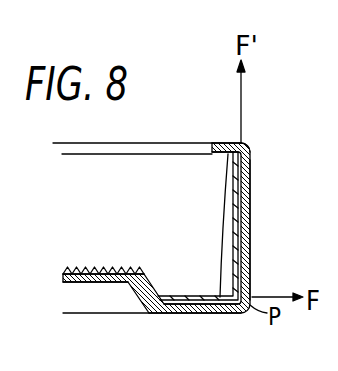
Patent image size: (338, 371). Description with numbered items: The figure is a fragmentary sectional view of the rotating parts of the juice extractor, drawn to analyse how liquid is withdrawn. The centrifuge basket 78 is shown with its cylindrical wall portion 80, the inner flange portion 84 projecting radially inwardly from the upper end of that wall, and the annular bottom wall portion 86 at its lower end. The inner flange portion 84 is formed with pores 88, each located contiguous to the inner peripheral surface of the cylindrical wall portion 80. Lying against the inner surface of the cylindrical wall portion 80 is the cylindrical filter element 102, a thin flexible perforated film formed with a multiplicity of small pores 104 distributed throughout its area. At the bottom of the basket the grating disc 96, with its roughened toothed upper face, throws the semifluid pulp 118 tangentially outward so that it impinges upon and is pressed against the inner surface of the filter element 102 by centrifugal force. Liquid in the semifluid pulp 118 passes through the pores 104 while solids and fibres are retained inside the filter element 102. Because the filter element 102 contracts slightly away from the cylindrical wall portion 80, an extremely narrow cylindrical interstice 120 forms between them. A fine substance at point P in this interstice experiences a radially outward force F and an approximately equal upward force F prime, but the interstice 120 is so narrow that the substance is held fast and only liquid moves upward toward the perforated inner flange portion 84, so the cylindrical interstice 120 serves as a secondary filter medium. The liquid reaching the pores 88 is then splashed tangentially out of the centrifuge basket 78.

The centrifuge basket 78 is at (95, 142).
The cylindrical filter element 102 is at (163, 152).
The inner flange portion 84 is at (229, 144).
The pores 88 is at (244, 147).
The cylindrical wall portion 80 is at (251, 190).
The cylindrical interstice 120 is at (251, 244).
The pores 104 is at (232, 220).
The semifluid pulp 118 is at (217, 255).
The grating disc 96 is at (87, 267).
The annular bottom wall portion 86 is at (170, 313).